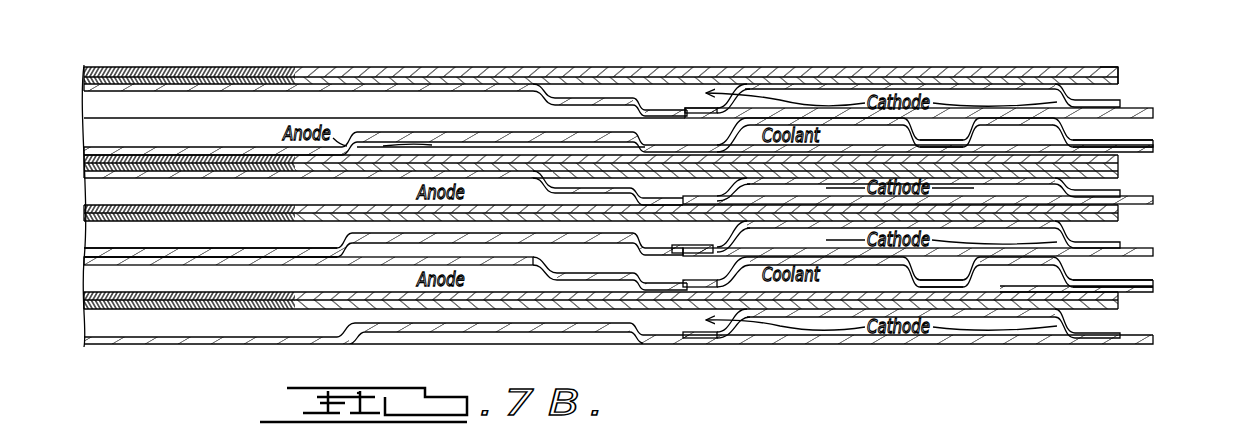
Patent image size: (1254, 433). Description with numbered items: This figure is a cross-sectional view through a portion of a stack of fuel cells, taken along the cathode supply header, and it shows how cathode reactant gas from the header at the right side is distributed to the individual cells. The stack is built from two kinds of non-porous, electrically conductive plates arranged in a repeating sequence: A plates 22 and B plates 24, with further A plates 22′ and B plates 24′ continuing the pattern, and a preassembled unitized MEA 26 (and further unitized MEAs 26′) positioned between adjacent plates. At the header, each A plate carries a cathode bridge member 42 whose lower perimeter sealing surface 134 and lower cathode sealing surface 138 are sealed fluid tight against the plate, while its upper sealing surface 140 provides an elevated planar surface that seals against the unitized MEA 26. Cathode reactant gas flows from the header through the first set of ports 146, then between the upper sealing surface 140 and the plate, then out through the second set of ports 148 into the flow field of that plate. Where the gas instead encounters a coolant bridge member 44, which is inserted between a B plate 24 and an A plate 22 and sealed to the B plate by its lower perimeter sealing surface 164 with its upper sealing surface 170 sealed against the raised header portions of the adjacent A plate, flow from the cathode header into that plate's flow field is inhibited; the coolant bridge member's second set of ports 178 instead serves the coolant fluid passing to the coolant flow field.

The B plate 24 is at (84, 149).
The A plate 22 is at (102, 177).
The B plate 24′ is at (85, 250).
The A plate 22′ is at (107, 263).
The unitized MEA 26 is at (330, 174).
The unitized MEA 26′ is at (327, 218).
The cathode bridge member 42 is at (1122, 92).
The coolant bridge member 44 is at (1145, 130).
The lower perimeter sealing surface 134 is at (690, 108).
The lower cathode sealing surface 138 is at (1122, 100).
The upper sealing surface 140 is at (990, 84).
The first set of ports 146 is at (1195, 68).
The second set of ports 148 is at (723, 83).
The lower perimeter sealing surface 164 is at (1153, 142).
The upper sealing surface 170 is at (845, 122).
The second set of ports 178 is at (722, 130).